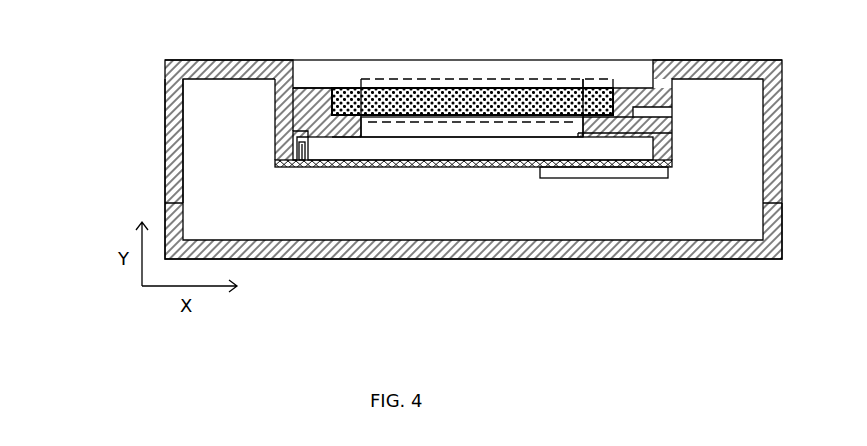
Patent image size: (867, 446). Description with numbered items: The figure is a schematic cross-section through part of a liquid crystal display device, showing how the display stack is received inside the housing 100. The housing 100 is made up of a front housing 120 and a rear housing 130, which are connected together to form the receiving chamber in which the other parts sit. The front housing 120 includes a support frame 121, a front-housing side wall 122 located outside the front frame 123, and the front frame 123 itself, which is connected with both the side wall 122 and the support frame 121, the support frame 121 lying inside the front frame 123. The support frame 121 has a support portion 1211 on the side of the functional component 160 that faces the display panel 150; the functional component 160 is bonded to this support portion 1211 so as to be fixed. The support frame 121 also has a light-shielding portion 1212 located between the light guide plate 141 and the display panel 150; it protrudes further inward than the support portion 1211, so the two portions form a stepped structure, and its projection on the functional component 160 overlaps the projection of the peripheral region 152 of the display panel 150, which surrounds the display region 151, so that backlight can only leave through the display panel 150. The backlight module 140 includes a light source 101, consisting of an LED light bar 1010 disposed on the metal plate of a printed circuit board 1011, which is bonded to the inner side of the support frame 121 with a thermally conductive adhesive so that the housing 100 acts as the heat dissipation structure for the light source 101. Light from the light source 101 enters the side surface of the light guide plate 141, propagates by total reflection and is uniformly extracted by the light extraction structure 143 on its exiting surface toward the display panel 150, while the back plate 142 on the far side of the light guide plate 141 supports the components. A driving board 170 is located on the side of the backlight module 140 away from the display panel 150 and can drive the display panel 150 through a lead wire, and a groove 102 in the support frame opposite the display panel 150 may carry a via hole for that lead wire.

The housing 100 is at (168, 154).
The rear housing 130 is at (450, 260).
The front housing 120 is at (410, 105).
The support frame 121 is at (289, 65).
The front-housing side wall 122 is at (172, 93).
The front frame 123 is at (228, 70).
The support portion 1211 is at (318, 100).
The light-shielding portion 1212 is at (340, 122).
The groove 102 is at (633, 110).
The display panel 150 is at (516, 68).
The display region 151 is at (435, 78).
The peripheral region 152 is at (597, 78).
The functional component 160 is at (600, 72).
The backlight module 140 is at (466, 159).
The light guide plate 141 is at (418, 148).
The back plate 142 is at (282, 167).
The light extraction structure 143 is at (578, 133).
The light source 101 is at (358, 169).
The LED light bar 1010 is at (302, 162).
The printed circuit board 1011 is at (300, 143).
The driving board 170 is at (633, 173).